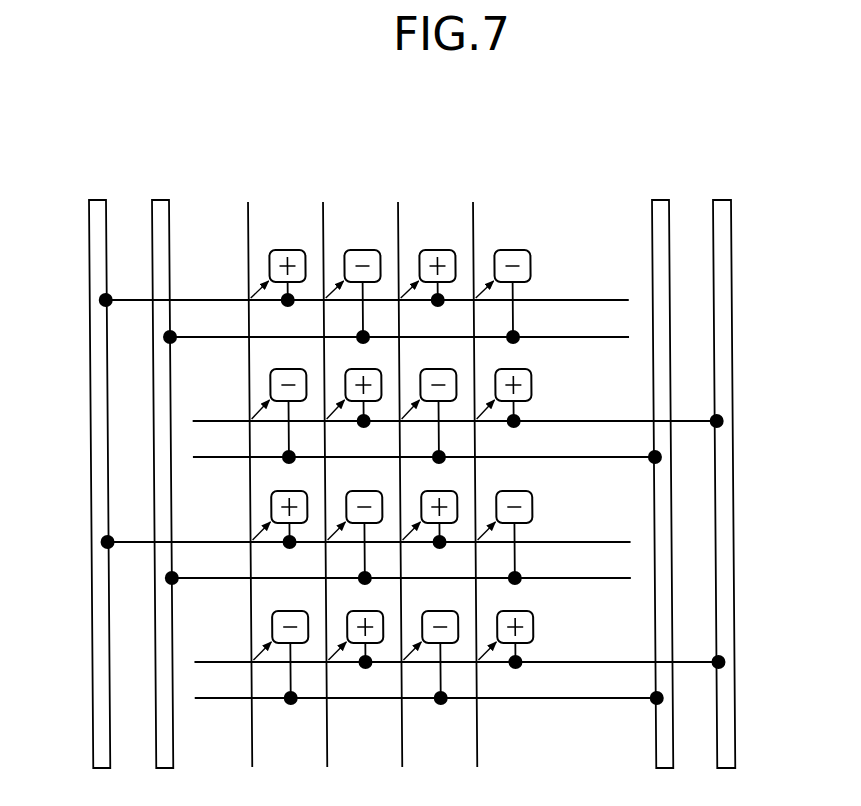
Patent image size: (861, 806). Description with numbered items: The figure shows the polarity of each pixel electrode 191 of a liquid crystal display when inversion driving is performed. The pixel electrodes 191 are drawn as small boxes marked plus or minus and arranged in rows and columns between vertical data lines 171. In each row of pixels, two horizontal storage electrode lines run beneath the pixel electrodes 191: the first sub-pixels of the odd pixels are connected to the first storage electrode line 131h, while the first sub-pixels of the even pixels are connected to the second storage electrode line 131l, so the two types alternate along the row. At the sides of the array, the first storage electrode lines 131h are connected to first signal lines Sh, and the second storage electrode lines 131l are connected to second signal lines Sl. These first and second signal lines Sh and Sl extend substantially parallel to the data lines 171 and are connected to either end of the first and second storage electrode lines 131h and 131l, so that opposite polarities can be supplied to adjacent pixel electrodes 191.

The pixel electrode 191 is at (286, 250).
The data line 171 is at (248, 238).
The first storage electrode line 131h is at (599, 300).
The second storage electrode line 131l is at (598, 337).
The first signal line Sh is at (88, 219).
The second signal line Sl is at (152, 256).